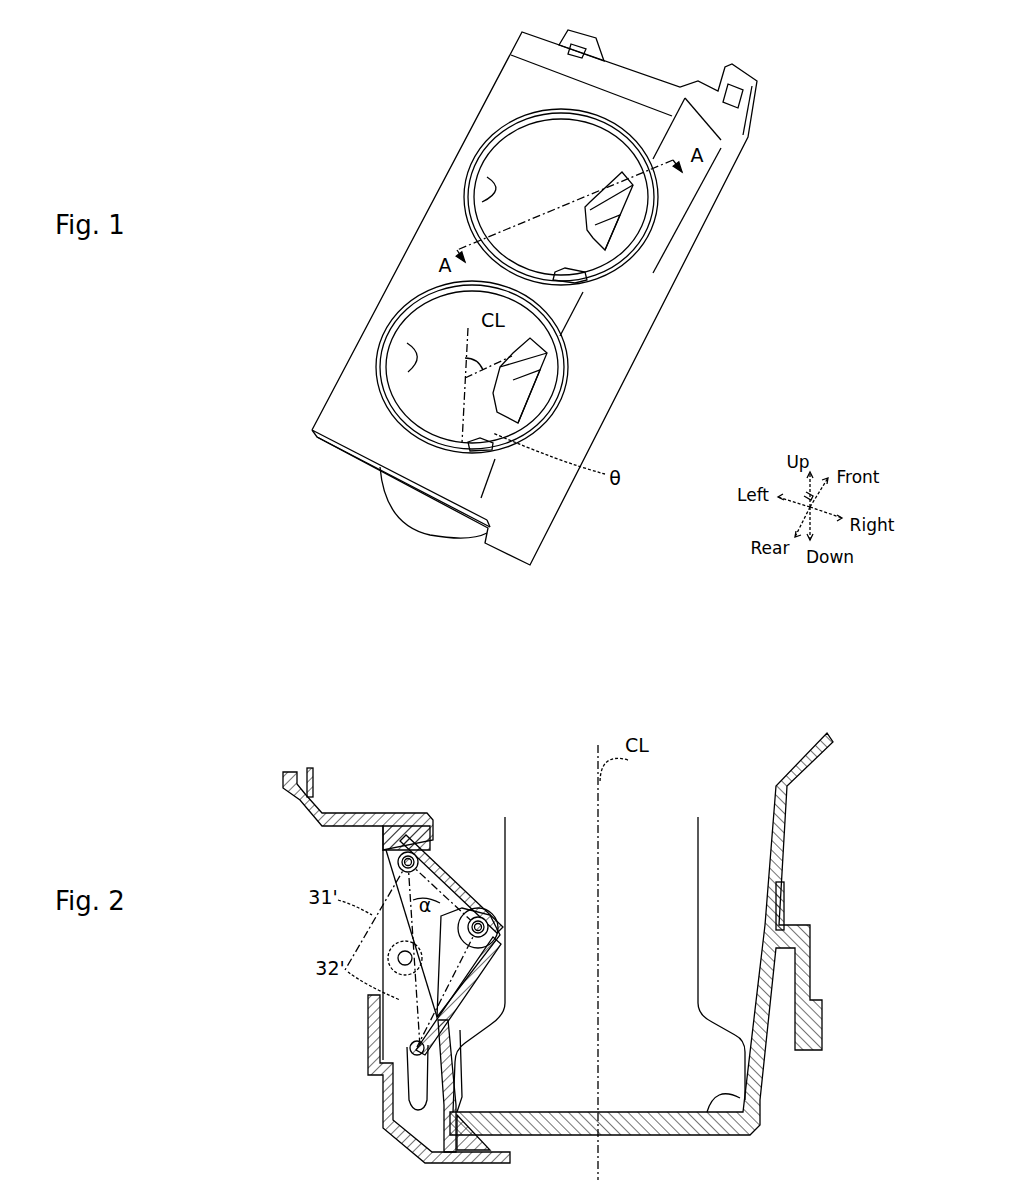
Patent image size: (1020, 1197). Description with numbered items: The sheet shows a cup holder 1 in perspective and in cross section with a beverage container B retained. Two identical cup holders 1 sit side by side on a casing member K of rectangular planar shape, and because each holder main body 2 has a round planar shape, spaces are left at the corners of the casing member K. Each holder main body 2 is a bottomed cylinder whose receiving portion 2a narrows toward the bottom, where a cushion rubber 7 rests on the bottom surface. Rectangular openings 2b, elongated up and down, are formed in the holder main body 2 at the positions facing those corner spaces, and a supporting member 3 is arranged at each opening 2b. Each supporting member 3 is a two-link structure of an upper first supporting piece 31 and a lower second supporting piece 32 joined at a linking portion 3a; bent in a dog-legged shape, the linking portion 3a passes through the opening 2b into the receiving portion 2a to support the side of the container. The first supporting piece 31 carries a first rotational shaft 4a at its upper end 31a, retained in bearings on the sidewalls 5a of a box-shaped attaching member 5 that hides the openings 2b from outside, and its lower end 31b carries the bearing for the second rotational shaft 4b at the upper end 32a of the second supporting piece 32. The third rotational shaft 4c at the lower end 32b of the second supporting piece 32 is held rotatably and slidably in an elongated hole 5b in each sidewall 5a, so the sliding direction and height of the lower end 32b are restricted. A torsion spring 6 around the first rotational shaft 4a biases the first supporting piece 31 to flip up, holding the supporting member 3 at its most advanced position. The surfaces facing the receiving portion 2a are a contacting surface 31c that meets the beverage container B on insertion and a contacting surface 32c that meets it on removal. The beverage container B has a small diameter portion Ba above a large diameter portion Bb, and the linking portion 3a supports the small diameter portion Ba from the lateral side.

In FIG. 1, the cup holder 1 is at (527, 177).
In FIG. 2, the cup holder 1 is at (358, 752).
In FIG. 1, the holder main body 2 is at (470, 186).
In FIG. 2, the holder main body 2 is at (766, 1060).
In FIG. 1, the receiving portion 2a is at (500, 132).
In FIG. 2, the receiving portion 2a is at (752, 783).
In FIG. 1, the rectangular opening 2b is at (615, 155).
In FIG. 2, the rectangular opening 2b is at (440, 848).
In FIG. 1, the supporting member 3 is at (752, 232).
In FIG. 2, the supporting member 3 is at (256, 860).
In FIG. 2, the linking portion 3a is at (497, 925).
In FIG. 1, the first supporting piece 31 is at (613, 212).
In FIG. 2, the first supporting piece 31 is at (383, 870).
In FIG. 2, the upper end of first supporting piece 31a is at (398, 863).
In FIG. 2, the lower end of first supporting piece 31b is at (492, 918).
In FIG. 2, the contacting surface 31c is at (428, 840).
In FIG. 1, the second supporting piece 32 is at (600, 235).
In FIG. 2, the second supporting piece 32 is at (383, 925).
In FIG. 2, the upper end of second supporting piece 32a is at (477, 915).
In FIG. 2, the lower end of second supporting piece 32b is at (457, 1040).
In FIG. 2, the contacting surface 32c is at (497, 958).
In FIG. 2, the first rotational shaft 4a is at (383, 852).
In FIG. 2, the second rotational shaft 4b is at (507, 860).
In FIG. 2, the third rotational shaft 4c is at (375, 985).
In FIG. 2, the attaching member 5 is at (380, 1070).
In FIG. 2, the sidewall 5a is at (428, 1122).
In FIG. 2, the elongated hole 5b is at (383, 1097).
In FIG. 2, the torsion spring 6 is at (405, 812).
In FIG. 2, the cushion rubber 7 is at (750, 1120).
In FIG. 1, the casing member K is at (600, 327).
In FIG. 2, the beverage container B is at (700, 832).
In FIG. 2, the small diameter portion Ba is at (700, 908).
In FIG. 2, the large diameter portion Bb is at (463, 1087).